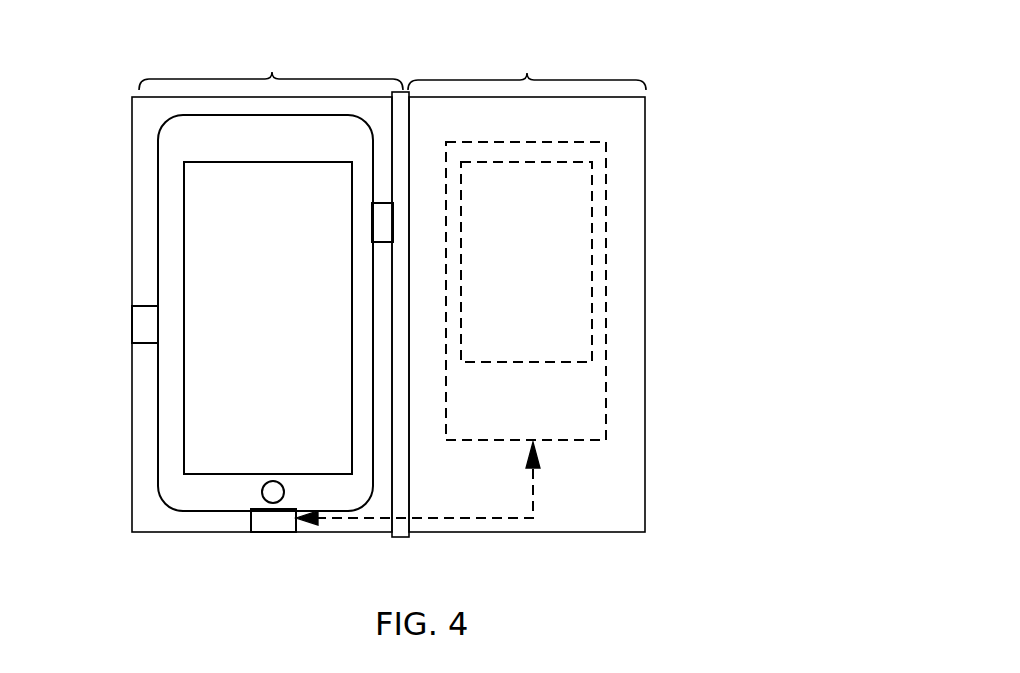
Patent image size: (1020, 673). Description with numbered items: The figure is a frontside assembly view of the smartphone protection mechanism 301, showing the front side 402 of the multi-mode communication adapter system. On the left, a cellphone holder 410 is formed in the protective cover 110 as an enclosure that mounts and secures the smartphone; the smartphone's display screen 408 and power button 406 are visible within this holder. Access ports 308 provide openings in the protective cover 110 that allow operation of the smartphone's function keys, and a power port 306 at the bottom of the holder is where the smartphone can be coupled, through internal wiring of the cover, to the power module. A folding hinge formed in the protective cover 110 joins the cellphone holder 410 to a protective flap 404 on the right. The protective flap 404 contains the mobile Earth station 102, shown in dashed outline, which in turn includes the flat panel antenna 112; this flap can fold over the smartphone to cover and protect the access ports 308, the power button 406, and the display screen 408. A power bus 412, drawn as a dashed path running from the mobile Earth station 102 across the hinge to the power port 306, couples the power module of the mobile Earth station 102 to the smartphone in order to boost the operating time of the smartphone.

The smartphone protection mechanism 301 is at (132, 49).
The front side 402 is at (133, 142).
The protective flap 404 is at (527, 73).
The cellphone holder 410 is at (272, 72).
The display screen 408 is at (247, 440).
The power button 406 is at (262, 495).
The power port 306 is at (272, 519).
The access ports 308 is at (383, 224).
The protective cover 110 is at (625, 167).
The mobile Earth station 102 is at (509, 415).
The flat panel antenna 112 is at (505, 212).
The power bus 412 is at (493, 517).